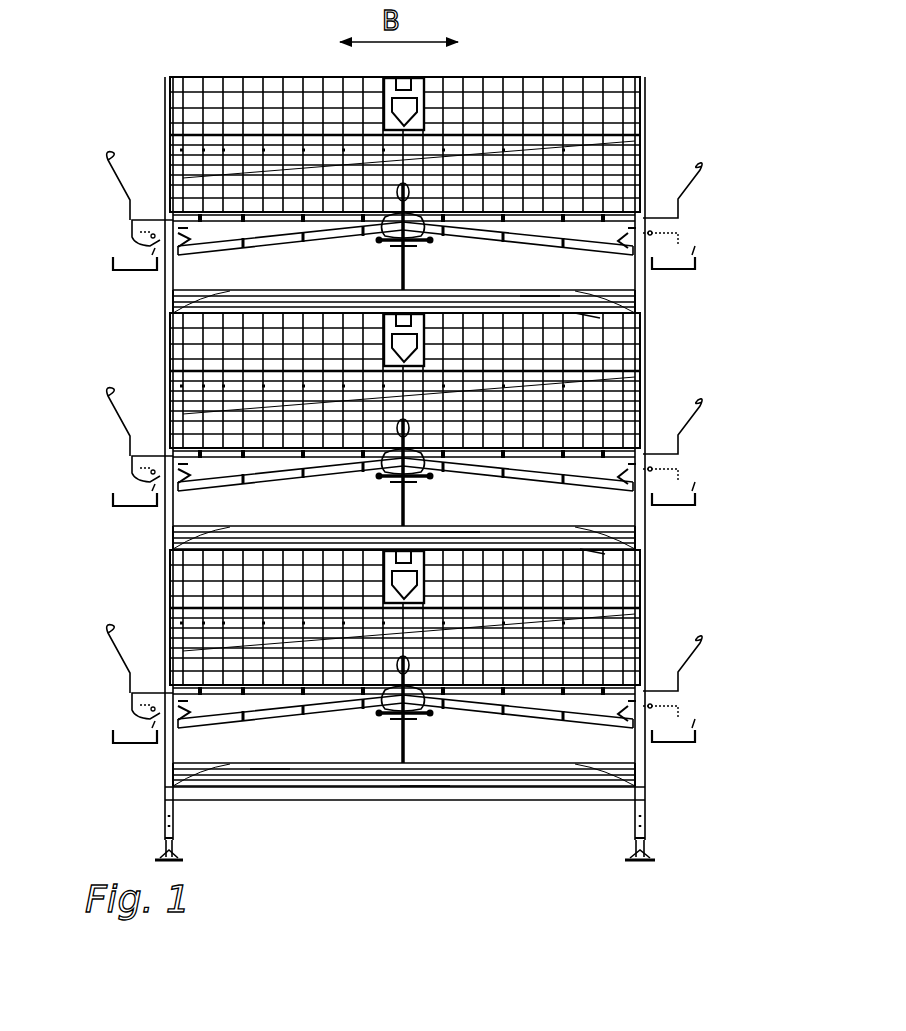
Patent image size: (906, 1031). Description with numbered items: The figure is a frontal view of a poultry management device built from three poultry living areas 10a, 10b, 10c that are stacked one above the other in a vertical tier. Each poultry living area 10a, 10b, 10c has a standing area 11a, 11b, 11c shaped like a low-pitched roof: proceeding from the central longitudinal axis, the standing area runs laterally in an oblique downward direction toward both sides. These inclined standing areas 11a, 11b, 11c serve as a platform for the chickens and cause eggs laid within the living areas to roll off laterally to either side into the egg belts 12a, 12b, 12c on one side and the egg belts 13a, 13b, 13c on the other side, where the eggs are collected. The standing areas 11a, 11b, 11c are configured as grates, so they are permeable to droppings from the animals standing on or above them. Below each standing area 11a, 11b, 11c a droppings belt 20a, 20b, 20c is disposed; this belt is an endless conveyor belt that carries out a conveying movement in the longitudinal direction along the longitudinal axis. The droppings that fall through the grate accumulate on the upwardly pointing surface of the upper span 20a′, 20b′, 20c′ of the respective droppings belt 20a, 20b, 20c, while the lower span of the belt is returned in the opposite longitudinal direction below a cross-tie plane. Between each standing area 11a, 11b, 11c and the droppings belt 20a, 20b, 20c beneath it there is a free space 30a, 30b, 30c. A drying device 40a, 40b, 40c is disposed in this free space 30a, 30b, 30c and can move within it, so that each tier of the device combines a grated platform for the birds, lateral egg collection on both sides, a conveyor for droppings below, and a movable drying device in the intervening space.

The poultry living area 10a is at (672, 130).
The poultry living area 10b is at (672, 368).
The poultry living area 10c is at (672, 600).
The standing area 11a is at (570, 231).
The standing area 11b is at (572, 468).
The standing area 11c is at (565, 703).
The egg belt 12a is at (152, 262).
The egg belt 12b is at (152, 498).
The egg belt 12c is at (152, 736).
The egg belt 13a is at (672, 262).
The egg belt 13b is at (672, 498).
The egg belt 13c is at (672, 736).
The droppings belt 20a is at (162, 296).
The upper span 20a′ is at (535, 293).
The droppings belt 20b is at (162, 532).
The upper span 20b′ is at (455, 517).
The droppings belt 20c is at (200, 750).
The upper span 20c′ is at (266, 762).
The free space 30a is at (505, 281).
The free space 30b is at (325, 521).
The free space 30c is at (475, 757).
The drying device 40a is at (375, 257).
The drying device 40b is at (380, 494).
The drying device 40c is at (372, 738).